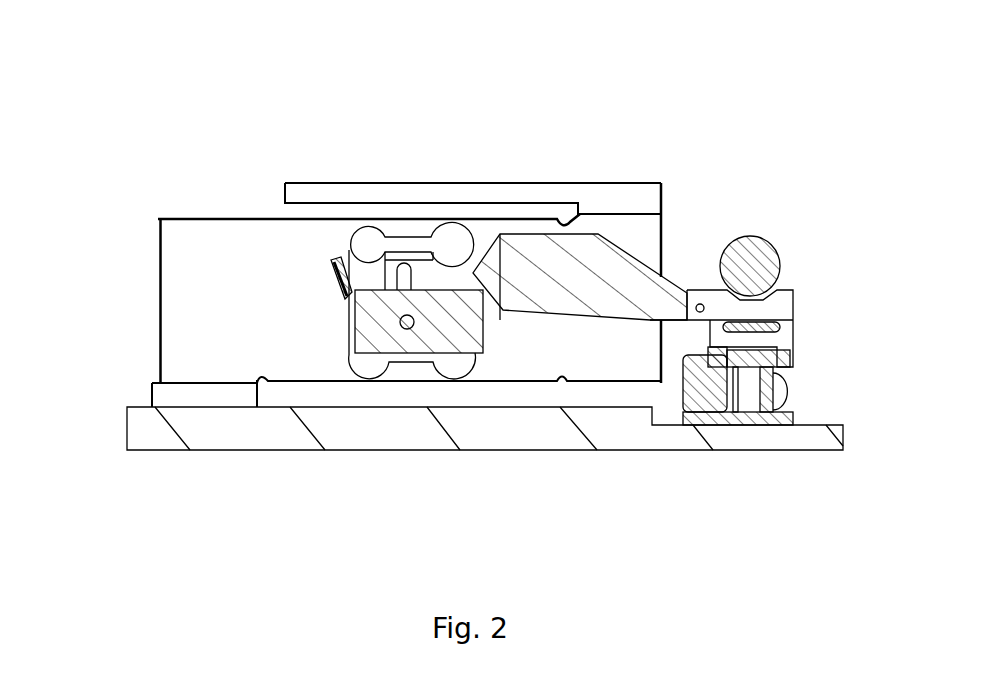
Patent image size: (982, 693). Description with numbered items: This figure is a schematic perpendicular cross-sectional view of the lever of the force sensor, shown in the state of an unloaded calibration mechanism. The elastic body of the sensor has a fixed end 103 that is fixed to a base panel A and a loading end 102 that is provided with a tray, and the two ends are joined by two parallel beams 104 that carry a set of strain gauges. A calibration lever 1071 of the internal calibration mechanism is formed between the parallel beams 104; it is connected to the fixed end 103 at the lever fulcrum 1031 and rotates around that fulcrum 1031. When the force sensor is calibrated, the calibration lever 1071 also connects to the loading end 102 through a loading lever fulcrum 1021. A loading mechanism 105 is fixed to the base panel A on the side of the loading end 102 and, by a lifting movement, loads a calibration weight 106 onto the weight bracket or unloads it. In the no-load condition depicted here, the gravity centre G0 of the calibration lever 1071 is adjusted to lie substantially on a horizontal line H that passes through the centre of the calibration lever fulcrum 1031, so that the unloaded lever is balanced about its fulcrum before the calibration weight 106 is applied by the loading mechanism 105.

The loading lever fulcrum 1021 is at (362, 240).
The parallel beams 104 is at (413, 227).
The calibration lever 1071 is at (527, 250).
The calibration weight 106 is at (730, 242).
The lever fulcrum 1031 is at (335, 272).
The fixed end 103 is at (262, 335).
The base panel A is at (297, 438).
The gravity centre G0 is at (500, 270).
The loading end 102 is at (557, 285).
The loading mechanism 105 is at (757, 405).
The horizontal line H is at (263, 279).